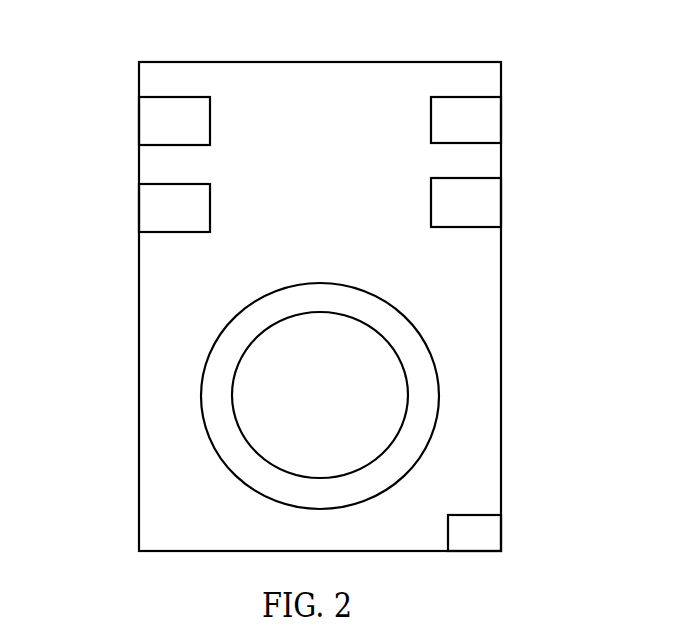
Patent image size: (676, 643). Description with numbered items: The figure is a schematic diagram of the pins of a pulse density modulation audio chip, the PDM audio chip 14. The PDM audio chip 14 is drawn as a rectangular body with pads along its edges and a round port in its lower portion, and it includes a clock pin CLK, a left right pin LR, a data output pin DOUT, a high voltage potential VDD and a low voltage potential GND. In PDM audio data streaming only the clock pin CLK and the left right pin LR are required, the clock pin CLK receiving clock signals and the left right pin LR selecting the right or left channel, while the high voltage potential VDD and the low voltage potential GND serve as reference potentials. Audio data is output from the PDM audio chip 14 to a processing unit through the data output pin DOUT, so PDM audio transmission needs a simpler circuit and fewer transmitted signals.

The PDM audio chip 14 is at (307, 277).
The data output pin DOUT is at (128, 121).
The high voltage potential VDD is at (133, 208).
The clock pin CLK is at (504, 120).
The left right pin LR is at (498, 202).
The low voltage potential GND is at (513, 533).